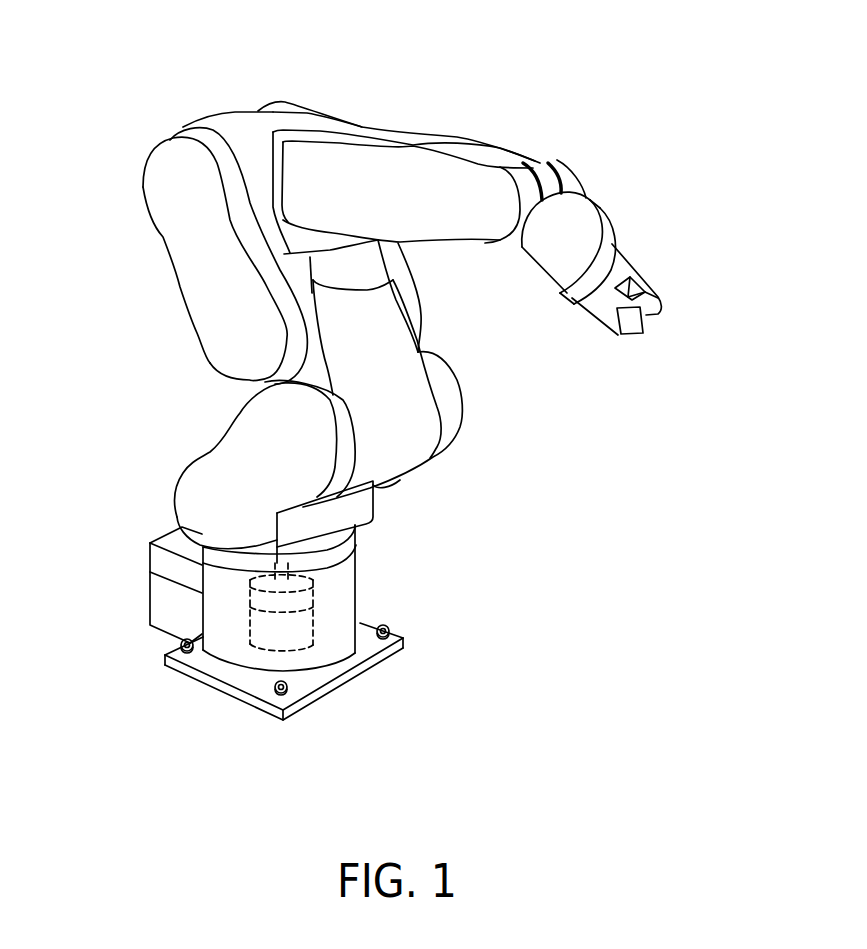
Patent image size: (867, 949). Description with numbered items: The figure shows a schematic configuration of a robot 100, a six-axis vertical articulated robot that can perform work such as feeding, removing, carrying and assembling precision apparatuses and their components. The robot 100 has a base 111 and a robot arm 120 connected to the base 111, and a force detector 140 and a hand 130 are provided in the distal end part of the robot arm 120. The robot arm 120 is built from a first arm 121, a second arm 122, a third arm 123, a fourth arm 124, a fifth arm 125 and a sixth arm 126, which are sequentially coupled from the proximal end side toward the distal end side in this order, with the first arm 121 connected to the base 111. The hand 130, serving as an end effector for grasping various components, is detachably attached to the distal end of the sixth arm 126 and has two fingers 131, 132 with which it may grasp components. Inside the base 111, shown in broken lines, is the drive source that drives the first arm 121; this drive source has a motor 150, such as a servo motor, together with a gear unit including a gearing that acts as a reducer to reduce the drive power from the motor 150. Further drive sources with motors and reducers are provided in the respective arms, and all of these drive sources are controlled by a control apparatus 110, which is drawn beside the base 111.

The robot 100 is at (480, 101).
The control apparatus 110 is at (163, 598).
The base 111 is at (303, 658).
The robot arm 120 is at (388, 121).
The first arm 121 is at (203, 497).
The second arm 122 is at (203, 270).
The third arm 123 is at (237, 127).
The fourth arm 124 is at (303, 178).
The fifth arm 125 is at (547, 177).
The sixth arm 126 is at (570, 207).
The hand 130 is at (640, 267).
The finger 131 is at (663, 315).
The finger 132 is at (632, 327).
The force detector 140 is at (590, 227).
The motor 150 is at (363, 612).